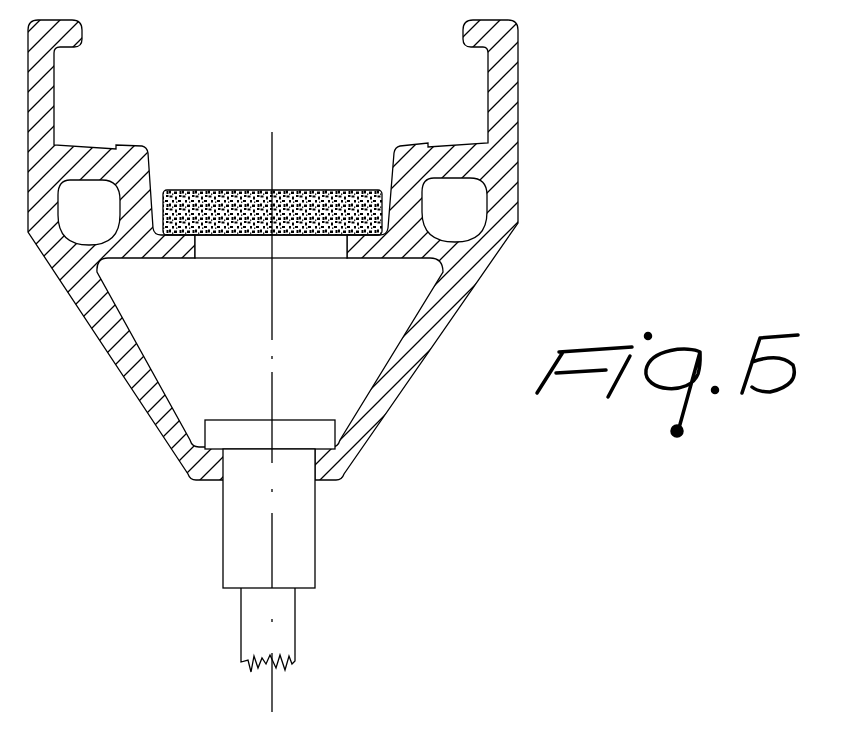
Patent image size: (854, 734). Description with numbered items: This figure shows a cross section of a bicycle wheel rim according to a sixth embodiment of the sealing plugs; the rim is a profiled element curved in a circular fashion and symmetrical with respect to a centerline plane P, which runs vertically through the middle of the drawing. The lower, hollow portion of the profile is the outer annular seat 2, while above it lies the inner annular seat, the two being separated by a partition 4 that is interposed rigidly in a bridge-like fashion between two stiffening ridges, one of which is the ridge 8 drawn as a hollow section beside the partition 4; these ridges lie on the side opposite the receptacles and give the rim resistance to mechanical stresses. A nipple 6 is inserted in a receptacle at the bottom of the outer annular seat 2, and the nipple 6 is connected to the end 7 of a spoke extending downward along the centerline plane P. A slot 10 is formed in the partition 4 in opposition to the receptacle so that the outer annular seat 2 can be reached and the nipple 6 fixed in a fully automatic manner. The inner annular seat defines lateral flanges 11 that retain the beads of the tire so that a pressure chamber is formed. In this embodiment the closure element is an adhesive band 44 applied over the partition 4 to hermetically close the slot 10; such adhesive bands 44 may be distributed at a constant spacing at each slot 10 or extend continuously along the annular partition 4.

The outer annular seat 2 is at (315, 250).
The partition 4 is at (184, 259).
The nipple 6 is at (290, 518).
The spoke end 7 is at (280, 617).
The ridge 8 is at (463, 215).
The slot 10 is at (343, 250).
The lateral flange 11 is at (519, 62).
The adhesive band 44 is at (330, 178).
The centerline plane P is at (270, 695).